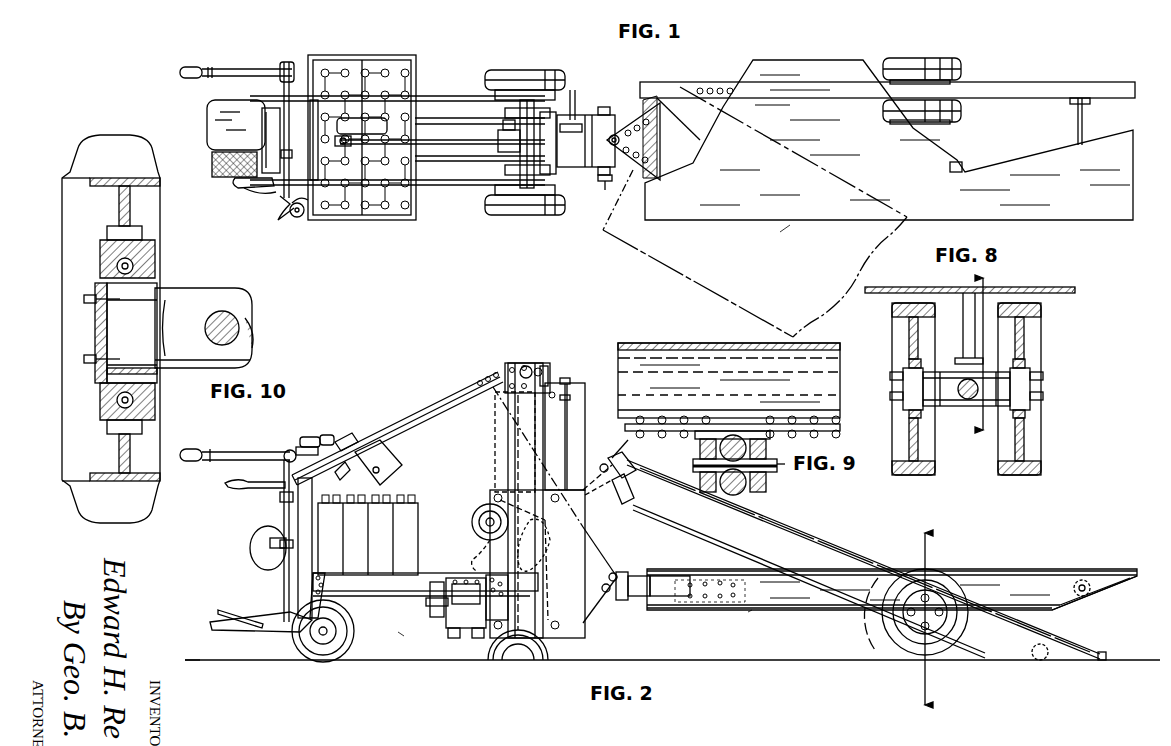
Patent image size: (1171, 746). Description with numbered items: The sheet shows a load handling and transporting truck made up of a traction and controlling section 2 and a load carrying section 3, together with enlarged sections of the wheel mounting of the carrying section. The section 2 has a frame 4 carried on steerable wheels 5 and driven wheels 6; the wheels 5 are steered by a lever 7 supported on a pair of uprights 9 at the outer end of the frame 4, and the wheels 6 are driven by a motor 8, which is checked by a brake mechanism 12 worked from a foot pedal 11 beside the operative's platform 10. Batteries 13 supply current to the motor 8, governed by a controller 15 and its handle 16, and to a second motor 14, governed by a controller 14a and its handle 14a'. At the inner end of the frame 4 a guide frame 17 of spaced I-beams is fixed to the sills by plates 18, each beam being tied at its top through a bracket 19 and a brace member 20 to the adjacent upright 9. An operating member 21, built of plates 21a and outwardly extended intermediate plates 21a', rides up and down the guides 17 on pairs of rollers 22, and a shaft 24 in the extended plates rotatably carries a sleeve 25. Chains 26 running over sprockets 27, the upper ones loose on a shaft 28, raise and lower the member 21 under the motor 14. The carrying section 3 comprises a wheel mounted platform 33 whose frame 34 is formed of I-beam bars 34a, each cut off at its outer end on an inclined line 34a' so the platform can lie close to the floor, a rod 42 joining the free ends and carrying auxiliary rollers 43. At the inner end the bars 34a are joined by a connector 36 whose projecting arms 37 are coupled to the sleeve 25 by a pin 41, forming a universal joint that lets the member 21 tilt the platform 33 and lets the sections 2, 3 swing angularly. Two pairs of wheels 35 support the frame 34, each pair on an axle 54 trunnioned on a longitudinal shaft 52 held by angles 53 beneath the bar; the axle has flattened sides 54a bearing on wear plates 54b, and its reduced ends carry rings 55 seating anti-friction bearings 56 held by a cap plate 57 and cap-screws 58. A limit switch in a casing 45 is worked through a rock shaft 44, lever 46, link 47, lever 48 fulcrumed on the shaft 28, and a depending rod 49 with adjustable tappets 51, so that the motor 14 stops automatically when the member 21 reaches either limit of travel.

In FIG. 2, the traction and controlling section 2 is at (399, 627).
In FIG. 1, the loading or unloading and carrying section 3 is at (782, 239).
In FIG. 2, the loading or unloading and carrying section 3 is at (747, 619).
In FIG. 1, the frame 4 is at (426, 120).
In FIG. 2, the frame 4 is at (382, 592).
In FIG. 2, the wheels 5 is at (325, 662).
In FIG. 1, the wheels 6 is at (520, 72).
In FIG. 2, the wheels 6 is at (518, 662).
In FIG. 1, the steering lever 7 is at (232, 68).
In FIG. 2, the steering lever 7 is at (238, 452).
In FIG. 2, the motor 8 is at (466, 578).
In FIG. 1, the uprights 9 is at (284, 184).
In FIG. 8, the uprights 9 is at (965, 354).
In FIG. 2, the uprights 9 is at (283, 521).
In FIG. 1, the platform 10 is at (215, 128).
In FIG. 2, the platform 10 is at (215, 628).
In FIG. 1, the foot pedal 11 is at (212, 162).
In FIG. 2, the foot pedal 11 is at (222, 610).
In FIG. 2, the brake mechanism 12 is at (436, 617).
In FIG. 1, the batteries 13 is at (386, 216).
In FIG. 2, the batteries 13 is at (400, 505).
In FIG. 1, the motor 14 is at (480, 152).
In FIG. 2, the motor 14 is at (474, 515).
In FIG. 1, the controller 14a is at (310, 220).
In FIG. 2, the controller 14a is at (320, 436).
In FIG. 1, the handle 14a' is at (282, 219).
In FIG. 2, the handle 14a' is at (306, 432).
In FIG. 1, the controller 15 is at (264, 140).
In FIG. 2, the controller 15 is at (262, 561).
In FIG. 1, the handle or lever 16 is at (250, 186).
In FIG. 2, the handle or lever 16 is at (255, 476).
In FIG. 2, the guide frame 17 is at (512, 434).
In FIG. 2, the plate 18 is at (496, 576).
In FIG. 2, the bracket 19 is at (510, 362).
In FIG. 1, the brace member 20 is at (446, 94).
In FIG. 2, the brace member 20 is at (405, 415).
In FIG. 2, the operating member 21 is at (568, 540).
In FIG. 1, the plates 21a is at (569, 147).
In FIG. 2, the plates 21a is at (605, 491).
In FIG. 1, the intermediate plates 21a' is at (681, 203).
In FIG. 2, the intermediate plates 21a' is at (609, 504).
In FIG. 2, the rollers 22 is at (494, 496).
In FIG. 1, the shaft 24 is at (602, 184).
In FIG. 2, the shaft 24 is at (607, 594).
In FIG. 1, the sleeve 25 is at (606, 156).
In FIG. 2, the sleeve 25 is at (610, 578).
In FIG. 2, the chains 26 is at (500, 476).
In FIG. 1, the sprockets 27 is at (560, 110).
In FIG. 2, the sprockets 27 is at (544, 366).
In FIG. 2, the shaft 28 is at (526, 365).
In FIG. 1, the platform 33 is at (889, 198).
In FIG. 8, the platform 33 is at (1072, 292).
In FIG. 9, the platform 33 is at (676, 345).
In FIG. 2, the platform 33 is at (1010, 570).
In FIG. 2, the frame 34 is at (812, 612).
In FIG. 1, the bars 34a is at (887, 75).
In FIG. 8, the bars 34a is at (975, 285).
In FIG. 9, the bars 34a is at (732, 383).
In FIG. 2, the bars 34a is at (892, 607).
In FIG. 2, the inclined line 34a' is at (1094, 595).
In FIG. 1, the wheels 35 is at (962, 66).
In FIG. 10, the wheels 35 is at (158, 500).
In FIG. 8, the wheels 35 is at (915, 475).
In FIG. 2, the wheels 35 is at (900, 645).
In FIG. 1, the connector 36 is at (676, 108).
In FIG. 2, the connector 36 is at (652, 576).
In FIG. 1, the arms 37 is at (626, 126).
In FIG. 2, the arms 37 is at (624, 572).
In FIG. 2, the pin or bolt 41 is at (596, 640).
In FIG. 1, the rod 42 is at (1076, 133).
In FIG. 2, the rod 42 is at (1085, 580).
In FIG. 1, the auxiliary supporting rollers 43 is at (1086, 102).
In FIG. 2, the auxiliary supporting rollers 43 is at (1082, 598).
In FIG. 1, the rock shaft 44 is at (568, 133).
In FIG. 2, the rock shaft 44 is at (376, 473).
In FIG. 1, the casing 45 is at (384, 108).
In FIG. 2, the casing 45 is at (380, 460).
In FIG. 1, the lever 46 is at (312, 138).
In FIG. 2, the lever 46 is at (378, 447).
In FIG. 1, the link 47 is at (434, 141).
In FIG. 2, the link 47 is at (348, 432).
In FIG. 1, the lever 48 is at (556, 130).
In FIG. 2, the lever 48 is at (565, 378).
In FIG. 2, the rod 49 is at (567, 430).
In FIG. 2, the tappets 51 is at (570, 397).
In FIG. 10, the shaft 52 is at (240, 332).
In FIG. 8, the shaft 52 is at (972, 400).
In FIG. 9, the shaft 52 is at (778, 470).
In FIG. 8, the angles 53 is at (948, 360).
In FIG. 9, the angles 53 is at (696, 440).
In FIG. 10, the axle 54 is at (230, 288).
In FIG. 8, the axle 54 is at (980, 410).
In FIG. 9, the axle 54 is at (760, 440).
In FIG. 10, the flattened sides 54a is at (250, 306).
In FIG. 8, the flattened sides 54a is at (955, 395).
In FIG. 9, the flattened sides 54a is at (738, 436).
In FIG. 9, the wear plates 54b is at (708, 438).
In FIG. 10, the rings 55 is at (157, 372).
In FIG. 10, the anti-friction bearings 56 is at (135, 270).
In FIG. 10, the cap plate 57 is at (95, 335).
In FIG. 8, the cap plate 57 is at (903, 395).
In FIG. 2, the cap plate 57 is at (900, 620).
In FIG. 10, the cap-screws 58 is at (84, 298).
In FIG. 8, the cap-screws 58 is at (890, 378).
In FIG. 2, the cap-screws 58 is at (928, 612).